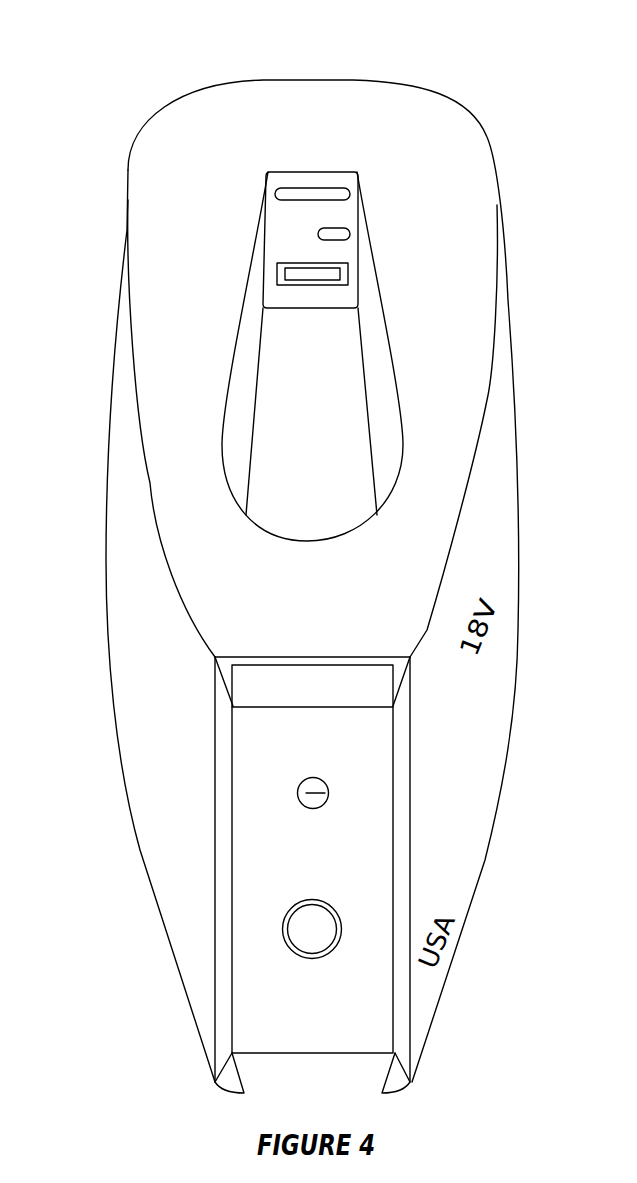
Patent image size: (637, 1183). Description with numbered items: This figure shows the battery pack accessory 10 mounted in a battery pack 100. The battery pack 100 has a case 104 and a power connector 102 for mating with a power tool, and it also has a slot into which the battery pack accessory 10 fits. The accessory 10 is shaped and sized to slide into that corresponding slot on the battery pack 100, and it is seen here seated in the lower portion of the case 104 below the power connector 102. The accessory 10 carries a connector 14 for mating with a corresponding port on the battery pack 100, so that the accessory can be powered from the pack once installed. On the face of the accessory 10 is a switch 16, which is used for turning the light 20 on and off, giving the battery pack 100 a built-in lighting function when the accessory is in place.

The battery pack 100 is at (189, 78).
The power connector 102 is at (277, 229).
The case 104 is at (140, 677).
The battery pack accessory 10 is at (245, 823).
The connector 14 is at (320, 707).
The light 20 is at (327, 797).
The switch 16 is at (342, 930).